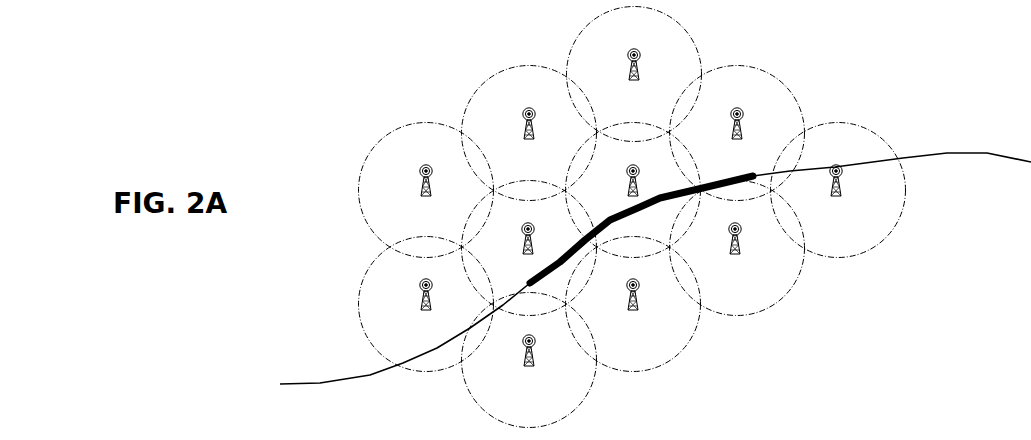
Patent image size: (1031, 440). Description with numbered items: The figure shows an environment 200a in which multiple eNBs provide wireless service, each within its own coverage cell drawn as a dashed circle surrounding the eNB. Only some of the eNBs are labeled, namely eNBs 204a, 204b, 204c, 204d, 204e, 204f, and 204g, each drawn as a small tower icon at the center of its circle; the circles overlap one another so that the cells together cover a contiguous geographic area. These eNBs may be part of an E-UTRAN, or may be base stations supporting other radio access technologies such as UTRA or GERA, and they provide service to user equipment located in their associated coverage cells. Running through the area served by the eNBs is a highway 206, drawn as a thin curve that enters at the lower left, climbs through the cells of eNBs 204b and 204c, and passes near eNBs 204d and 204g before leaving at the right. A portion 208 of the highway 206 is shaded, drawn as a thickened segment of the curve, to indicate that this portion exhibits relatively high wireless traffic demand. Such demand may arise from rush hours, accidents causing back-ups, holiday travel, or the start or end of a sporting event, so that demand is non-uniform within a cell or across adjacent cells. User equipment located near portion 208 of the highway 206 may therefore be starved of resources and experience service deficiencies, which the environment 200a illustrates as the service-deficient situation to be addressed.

The environment 200a is at (353, 88).
The eNB 204a is at (423, 212).
The eNB 204b is at (532, 270).
The eNB 204c is at (622, 197).
The eNB 204d is at (758, 160).
The eNB 204e is at (662, 335).
The eNB 204f is at (771, 274).
The eNB 204g is at (868, 227).
The highway 206 is at (953, 153).
The portion of highway 208 is at (658, 207).